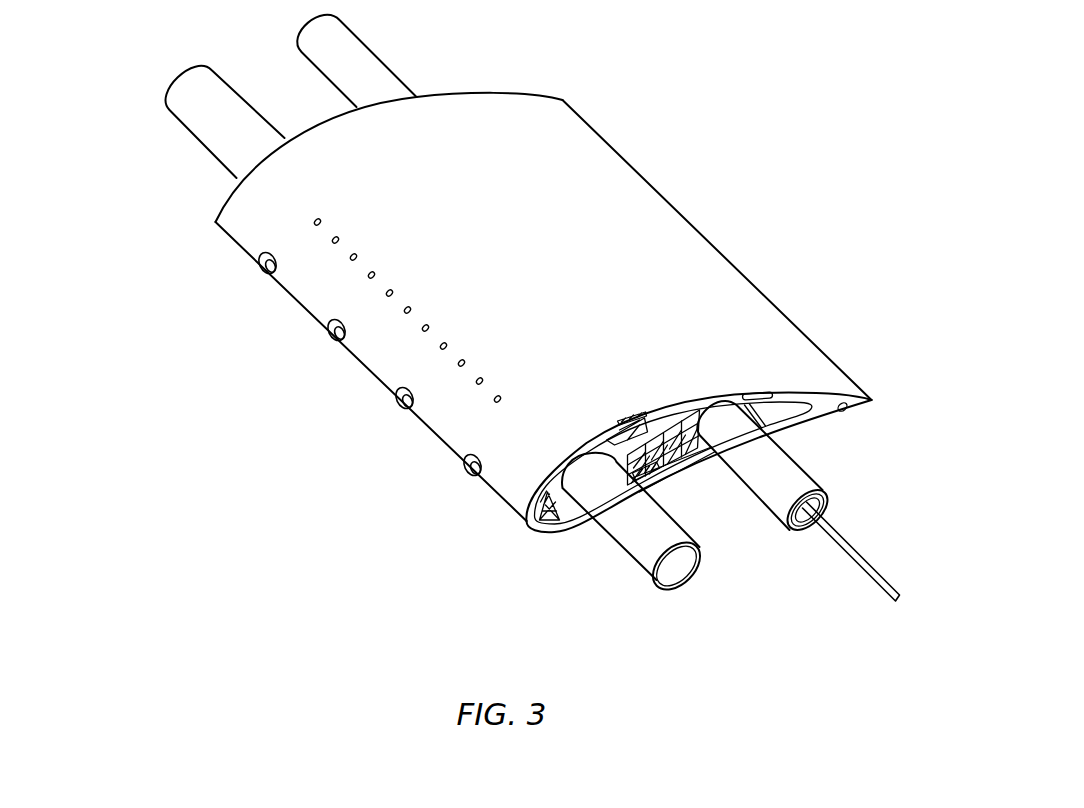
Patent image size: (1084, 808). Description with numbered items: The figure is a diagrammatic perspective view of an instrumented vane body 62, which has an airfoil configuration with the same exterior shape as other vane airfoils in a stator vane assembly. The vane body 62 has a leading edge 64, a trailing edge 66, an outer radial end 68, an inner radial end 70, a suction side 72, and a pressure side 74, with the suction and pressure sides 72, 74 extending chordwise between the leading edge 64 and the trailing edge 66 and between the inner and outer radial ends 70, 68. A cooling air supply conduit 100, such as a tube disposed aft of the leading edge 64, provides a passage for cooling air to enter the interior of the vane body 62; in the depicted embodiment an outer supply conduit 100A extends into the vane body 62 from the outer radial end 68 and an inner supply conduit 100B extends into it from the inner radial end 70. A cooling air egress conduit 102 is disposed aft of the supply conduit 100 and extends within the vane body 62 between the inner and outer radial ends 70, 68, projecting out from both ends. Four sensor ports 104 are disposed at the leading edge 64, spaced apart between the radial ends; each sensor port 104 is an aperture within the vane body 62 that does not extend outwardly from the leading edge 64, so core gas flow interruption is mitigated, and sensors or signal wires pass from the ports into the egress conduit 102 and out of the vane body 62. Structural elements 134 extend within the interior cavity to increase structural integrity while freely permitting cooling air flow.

The instrumented vane body 62 is at (770, 103).
The leading edge 64 is at (368, 377).
The trailing edge 66 is at (872, 400).
The outer radial end 68 is at (297, 107).
The inner radial end 70 is at (715, 475).
The suction side 72 is at (767, 332).
The pressure side 74 is at (833, 430).
The cooling air supply conduit 100 is at (376, 361).
The outer supply conduit 100A is at (612, 572).
The inner supply conduit 100B is at (193, 138).
The cooling air egress conduit 102 is at (407, 62).
The sensor ports 104 is at (470, 465).
The structural elements 134 is at (663, 467).